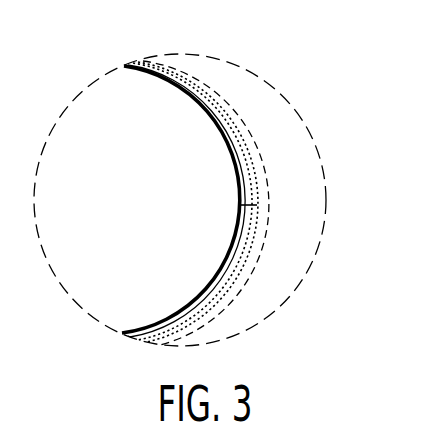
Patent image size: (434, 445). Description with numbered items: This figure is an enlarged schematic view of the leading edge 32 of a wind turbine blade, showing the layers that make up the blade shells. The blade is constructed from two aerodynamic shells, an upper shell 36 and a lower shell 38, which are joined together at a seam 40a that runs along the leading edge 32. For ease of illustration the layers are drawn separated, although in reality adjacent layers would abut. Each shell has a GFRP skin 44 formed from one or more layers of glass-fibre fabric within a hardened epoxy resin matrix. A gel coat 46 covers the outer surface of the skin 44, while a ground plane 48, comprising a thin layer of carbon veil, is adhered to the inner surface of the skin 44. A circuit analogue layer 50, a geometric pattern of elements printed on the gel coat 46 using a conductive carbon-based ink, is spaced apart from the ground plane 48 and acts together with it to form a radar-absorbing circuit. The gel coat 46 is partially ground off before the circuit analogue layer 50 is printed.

The leading edge 32 is at (286, 82).
The upper shell 36 is at (219, 212).
The lower shell 38 is at (214, 320).
The seam 40a is at (239, 217).
The GFRP skin 44 is at (185, 95).
The gel coat 46 is at (246, 265).
The ground plane 48 is at (225, 143).
The circuit analogue layer 50 is at (267, 184).